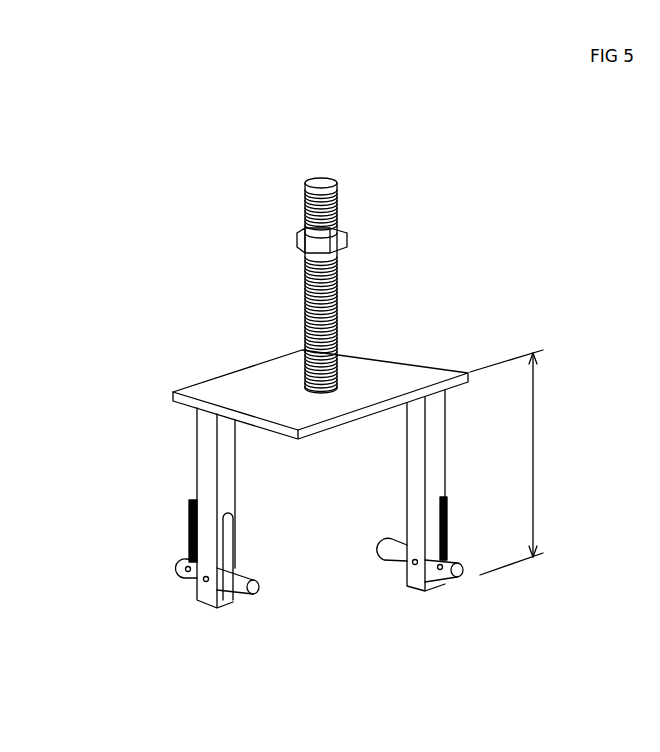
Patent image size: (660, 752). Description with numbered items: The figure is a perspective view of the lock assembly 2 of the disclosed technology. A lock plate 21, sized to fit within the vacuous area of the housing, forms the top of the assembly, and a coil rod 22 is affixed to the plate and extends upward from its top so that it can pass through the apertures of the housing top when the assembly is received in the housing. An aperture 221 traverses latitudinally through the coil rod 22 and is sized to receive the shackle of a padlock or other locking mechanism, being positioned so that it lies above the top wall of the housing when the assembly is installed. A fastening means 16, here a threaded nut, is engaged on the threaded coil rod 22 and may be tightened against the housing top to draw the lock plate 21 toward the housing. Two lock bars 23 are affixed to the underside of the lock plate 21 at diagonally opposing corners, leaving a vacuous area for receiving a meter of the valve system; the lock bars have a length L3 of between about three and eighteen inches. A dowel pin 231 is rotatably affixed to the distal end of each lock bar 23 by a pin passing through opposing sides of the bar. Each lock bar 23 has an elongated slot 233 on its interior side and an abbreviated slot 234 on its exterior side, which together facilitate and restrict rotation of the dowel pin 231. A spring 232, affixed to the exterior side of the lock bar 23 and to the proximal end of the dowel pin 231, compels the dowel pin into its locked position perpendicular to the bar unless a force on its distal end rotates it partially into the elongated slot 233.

The lock assembly 2 is at (472, 245).
The fastening means 16 is at (346, 241).
The lock plate 21 is at (428, 366).
The coil rod 22 is at (330, 197).
The aperture 221 is at (330, 361).
The lock bar 23 is at (205, 597).
The dowel pin 231 is at (238, 592).
The spring 232 is at (187, 532).
The elongated slot 233 is at (226, 538).
The abbreviated slot 234 is at (430, 590).
The length L3 is at (516, 462).